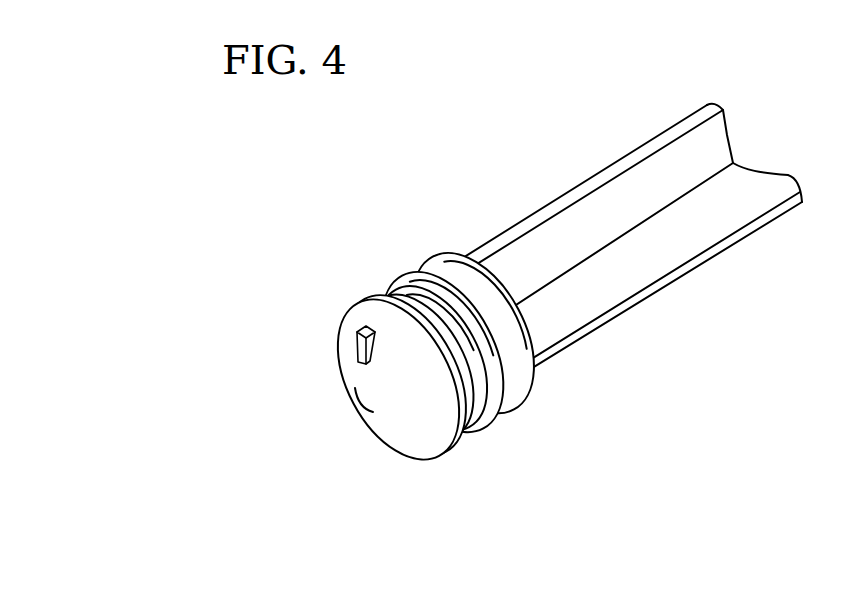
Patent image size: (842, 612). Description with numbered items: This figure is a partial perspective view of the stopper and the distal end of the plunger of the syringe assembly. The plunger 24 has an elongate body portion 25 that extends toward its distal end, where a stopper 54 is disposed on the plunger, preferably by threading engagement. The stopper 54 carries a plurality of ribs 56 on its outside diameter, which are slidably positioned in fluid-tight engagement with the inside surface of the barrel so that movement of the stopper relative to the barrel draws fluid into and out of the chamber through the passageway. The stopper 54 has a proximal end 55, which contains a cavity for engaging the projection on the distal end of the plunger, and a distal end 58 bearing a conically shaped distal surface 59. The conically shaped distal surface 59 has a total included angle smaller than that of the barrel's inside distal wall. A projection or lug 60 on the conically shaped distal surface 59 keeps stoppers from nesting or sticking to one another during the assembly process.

The plunger 24 is at (604, 187).
The elongate body portion 25 is at (685, 240).
The stopper 54 is at (470, 420).
The proximal end 55 is at (530, 383).
The ribs 56 is at (357, 302).
The distal end 58 is at (463, 432).
The conically shaped distal surface 59 is at (407, 427).
The projection or lug 60 is at (357, 350).